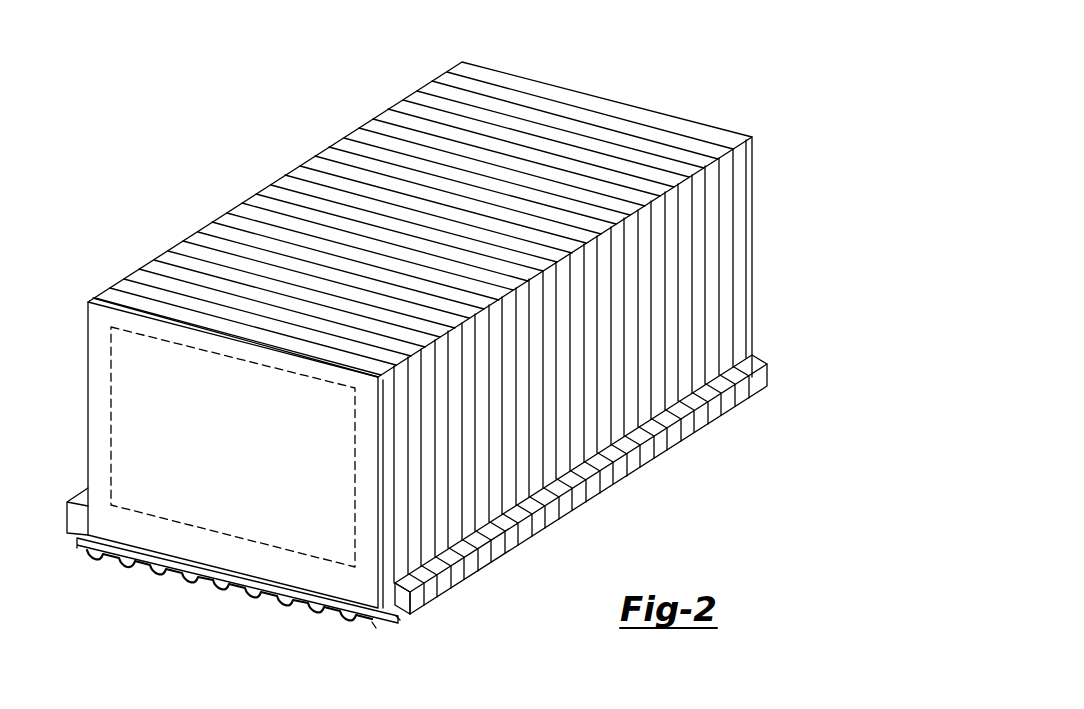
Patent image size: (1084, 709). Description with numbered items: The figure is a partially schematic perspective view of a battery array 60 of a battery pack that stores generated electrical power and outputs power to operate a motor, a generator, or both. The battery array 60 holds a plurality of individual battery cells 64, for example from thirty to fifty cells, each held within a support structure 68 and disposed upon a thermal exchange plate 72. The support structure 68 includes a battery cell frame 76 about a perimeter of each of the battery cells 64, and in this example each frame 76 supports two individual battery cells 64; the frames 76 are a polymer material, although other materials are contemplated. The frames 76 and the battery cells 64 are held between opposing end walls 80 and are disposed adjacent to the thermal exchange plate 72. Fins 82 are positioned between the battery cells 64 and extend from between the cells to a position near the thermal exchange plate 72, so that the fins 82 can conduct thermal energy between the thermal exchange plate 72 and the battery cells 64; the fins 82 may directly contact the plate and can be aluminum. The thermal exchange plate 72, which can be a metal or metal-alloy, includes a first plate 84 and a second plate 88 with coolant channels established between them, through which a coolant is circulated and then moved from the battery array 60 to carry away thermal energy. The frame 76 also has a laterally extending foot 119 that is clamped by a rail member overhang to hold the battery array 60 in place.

The battery array 60 is at (765, 15).
The support structure 68 is at (240, 220).
The fins 82 is at (616, 542).
The laterally extending foot 119 is at (551, 585).
The battery cell frame 76 is at (490, 627).
The end walls 80 is at (797, 278).
The battery cells 64 is at (147, 600).
The thermal exchange plate 72 is at (217, 625).
The second plate 88 is at (377, 665).
The first plate 84 is at (402, 672).